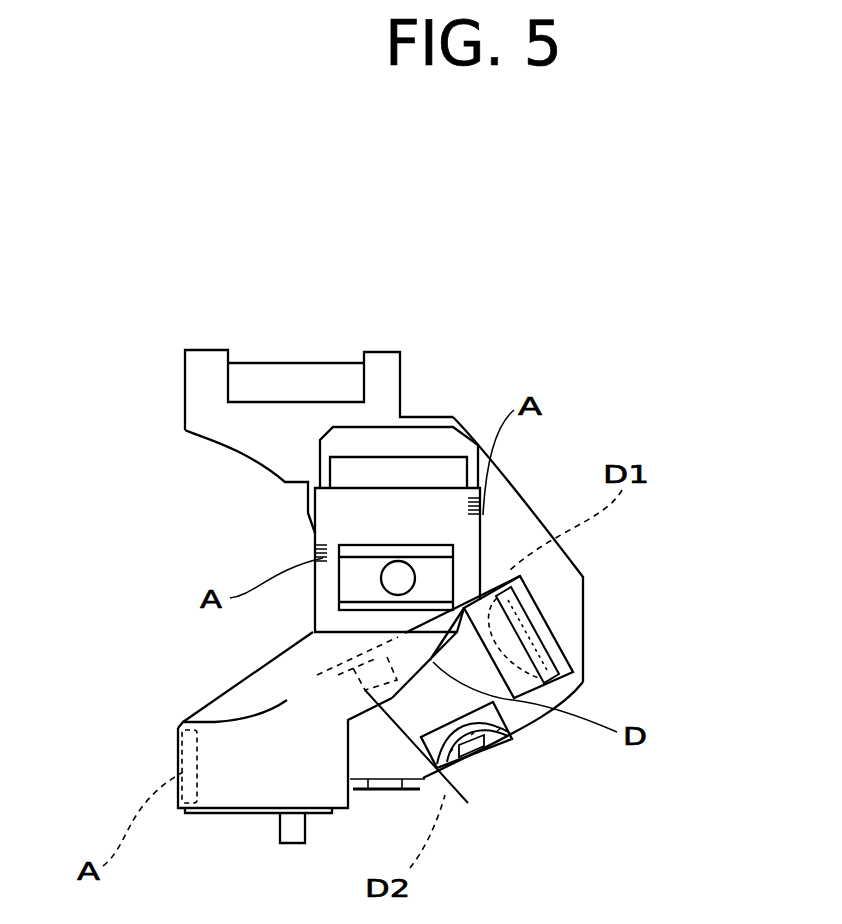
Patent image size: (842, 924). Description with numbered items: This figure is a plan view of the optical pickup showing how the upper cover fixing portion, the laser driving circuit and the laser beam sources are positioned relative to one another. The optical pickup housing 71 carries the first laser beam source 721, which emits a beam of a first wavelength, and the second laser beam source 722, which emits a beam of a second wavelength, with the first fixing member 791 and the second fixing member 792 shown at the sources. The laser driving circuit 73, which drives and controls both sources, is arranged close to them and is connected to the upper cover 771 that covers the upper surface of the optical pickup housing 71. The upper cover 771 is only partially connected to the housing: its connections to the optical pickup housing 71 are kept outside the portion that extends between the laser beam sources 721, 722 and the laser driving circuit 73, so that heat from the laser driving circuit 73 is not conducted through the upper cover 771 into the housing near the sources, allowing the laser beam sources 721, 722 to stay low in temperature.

The optical pickup housing 71 is at (227, 420).
The laser driving circuit 73 is at (317, 675).
The upper cover 771 is at (183, 722).
The second fixing member 792 is at (520, 576).
The first fixing member 791 is at (575, 670).
The second laser beam source 722 is at (545, 632).
The first laser beam source 721 is at (486, 738).